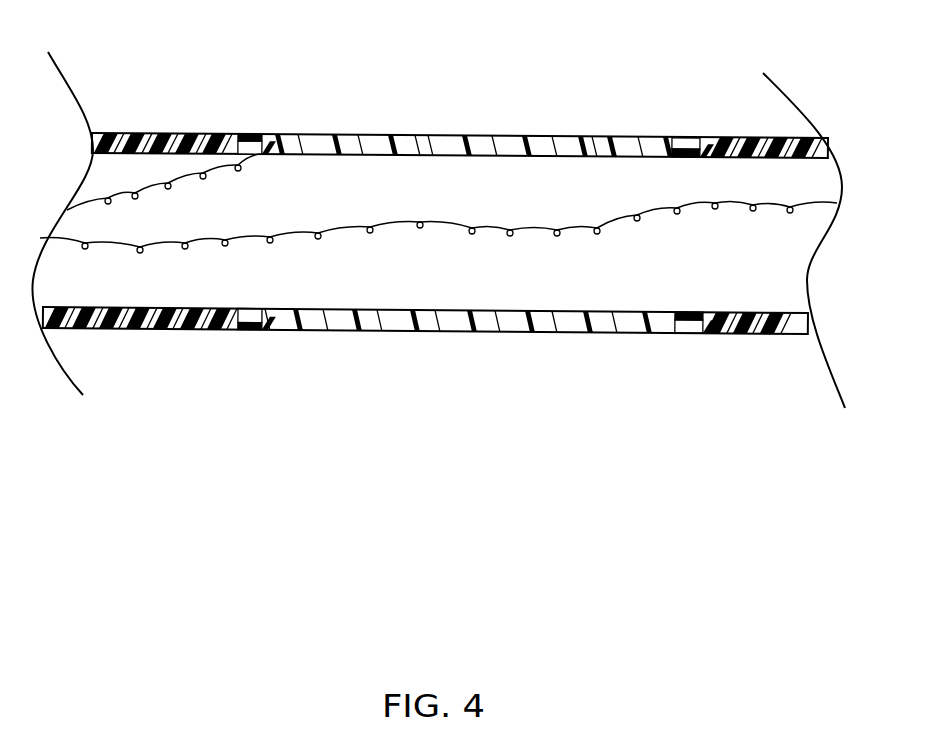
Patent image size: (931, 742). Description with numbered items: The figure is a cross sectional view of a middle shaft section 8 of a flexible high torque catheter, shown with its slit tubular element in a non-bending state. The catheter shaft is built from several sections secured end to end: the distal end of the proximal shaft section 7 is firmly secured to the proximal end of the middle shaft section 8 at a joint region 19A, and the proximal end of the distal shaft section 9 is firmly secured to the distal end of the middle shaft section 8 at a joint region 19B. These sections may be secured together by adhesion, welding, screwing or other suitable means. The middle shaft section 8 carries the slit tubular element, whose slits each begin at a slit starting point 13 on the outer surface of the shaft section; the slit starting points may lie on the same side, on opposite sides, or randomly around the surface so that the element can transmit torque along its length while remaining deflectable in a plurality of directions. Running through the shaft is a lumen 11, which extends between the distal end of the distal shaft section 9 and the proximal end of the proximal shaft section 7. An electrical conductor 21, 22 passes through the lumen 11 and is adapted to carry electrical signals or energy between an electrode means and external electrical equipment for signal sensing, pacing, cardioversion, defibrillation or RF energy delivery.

The proximal shaft section 7 is at (153, 130).
The middle shaft section 8 is at (540, 135).
The distal shaft section 9 is at (757, 340).
The lumen 11 is at (430, 272).
The slit starting point 13 is at (603, 132).
The joint region 19A is at (258, 130).
The joint region 19B is at (693, 132).
The electrical conductor 21 is at (182, 177).
The electrical conductor 22 is at (245, 242).